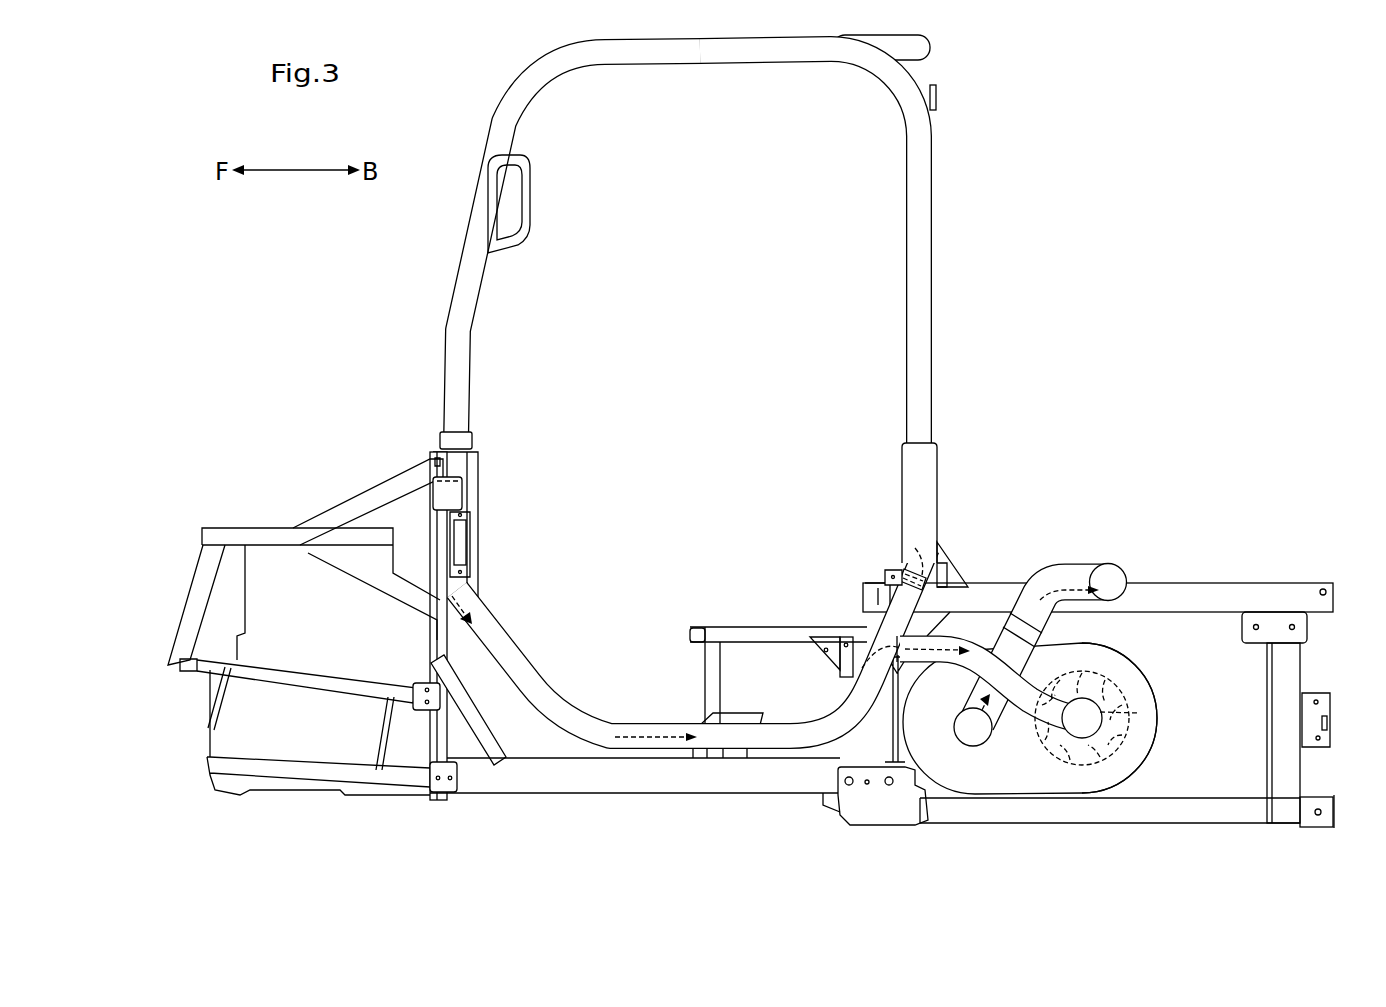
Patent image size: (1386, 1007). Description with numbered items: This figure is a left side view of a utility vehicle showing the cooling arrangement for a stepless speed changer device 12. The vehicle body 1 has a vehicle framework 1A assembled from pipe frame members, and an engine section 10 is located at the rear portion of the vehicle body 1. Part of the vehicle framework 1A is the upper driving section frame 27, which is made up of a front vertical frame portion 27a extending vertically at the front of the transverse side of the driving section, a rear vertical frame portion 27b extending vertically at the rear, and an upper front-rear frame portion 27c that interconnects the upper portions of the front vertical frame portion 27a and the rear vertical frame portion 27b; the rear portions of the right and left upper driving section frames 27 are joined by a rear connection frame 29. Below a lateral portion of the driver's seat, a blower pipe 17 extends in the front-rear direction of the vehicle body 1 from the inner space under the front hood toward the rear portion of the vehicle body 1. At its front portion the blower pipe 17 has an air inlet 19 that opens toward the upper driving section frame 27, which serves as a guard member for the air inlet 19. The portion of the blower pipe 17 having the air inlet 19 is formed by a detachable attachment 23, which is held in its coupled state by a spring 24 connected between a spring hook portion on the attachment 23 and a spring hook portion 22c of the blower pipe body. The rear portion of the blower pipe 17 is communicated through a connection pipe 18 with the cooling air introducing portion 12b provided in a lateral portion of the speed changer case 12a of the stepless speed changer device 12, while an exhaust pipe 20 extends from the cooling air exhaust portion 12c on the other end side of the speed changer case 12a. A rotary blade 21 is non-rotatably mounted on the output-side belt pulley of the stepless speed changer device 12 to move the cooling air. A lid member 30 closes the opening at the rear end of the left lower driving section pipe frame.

The vehicle body 1 is at (500, 796).
The vehicle framework 1A is at (560, 748).
The engine section 10 is at (991, 622).
The stepless speed changer device 12 is at (1078, 718).
The speed changer case 12a is at (1150, 742).
The cooling air introducing portion 12b is at (1107, 688).
The cooling air exhaust portion 12c is at (986, 740).
The blower pipe 17 is at (590, 723).
The connection pipe 18 is at (963, 665).
The air inlet 19 is at (443, 492).
The exhaust pipe 20 is at (1070, 567).
The rotary blade 21 is at (1140, 713).
The spring hook portion 22c is at (467, 557).
The attachment 23 is at (458, 495).
The spring 24 is at (464, 527).
The upper driving section frame 27 is at (750, 247).
The front vertical frame portion 27a is at (470, 290).
The rear vertical frame portion 27b is at (908, 313).
The upper front-rear frame portion 27c is at (706, 62).
The rear connection frame 29 is at (928, 47).
The lid member 30 is at (912, 566).